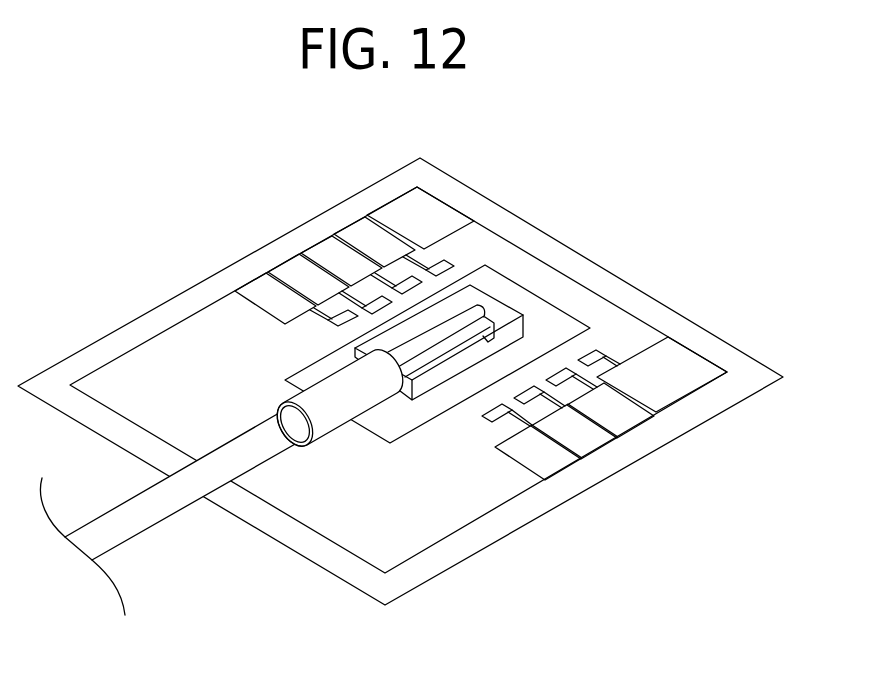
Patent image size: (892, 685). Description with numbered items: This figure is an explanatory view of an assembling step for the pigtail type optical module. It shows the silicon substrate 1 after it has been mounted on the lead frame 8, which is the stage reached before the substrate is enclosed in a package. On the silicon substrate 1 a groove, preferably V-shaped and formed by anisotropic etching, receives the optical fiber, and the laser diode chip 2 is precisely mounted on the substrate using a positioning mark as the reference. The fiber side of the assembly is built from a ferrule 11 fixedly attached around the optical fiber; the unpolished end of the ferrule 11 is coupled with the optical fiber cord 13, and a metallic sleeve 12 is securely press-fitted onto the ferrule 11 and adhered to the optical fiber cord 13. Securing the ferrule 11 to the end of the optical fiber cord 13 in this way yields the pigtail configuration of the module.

The silicon substrate 1 is at (520, 332).
The laser diode chip 2 is at (482, 318).
The lead frame 8 is at (622, 455).
The ferrule 11 is at (440, 327).
The metallic sleeve 12 is at (313, 358).
The optical fiber cord 13 is at (218, 458).